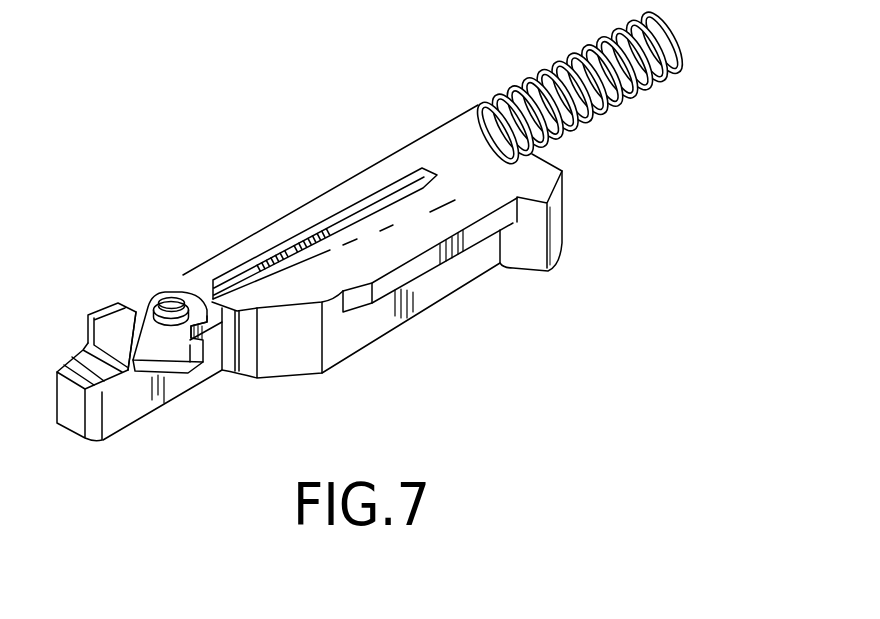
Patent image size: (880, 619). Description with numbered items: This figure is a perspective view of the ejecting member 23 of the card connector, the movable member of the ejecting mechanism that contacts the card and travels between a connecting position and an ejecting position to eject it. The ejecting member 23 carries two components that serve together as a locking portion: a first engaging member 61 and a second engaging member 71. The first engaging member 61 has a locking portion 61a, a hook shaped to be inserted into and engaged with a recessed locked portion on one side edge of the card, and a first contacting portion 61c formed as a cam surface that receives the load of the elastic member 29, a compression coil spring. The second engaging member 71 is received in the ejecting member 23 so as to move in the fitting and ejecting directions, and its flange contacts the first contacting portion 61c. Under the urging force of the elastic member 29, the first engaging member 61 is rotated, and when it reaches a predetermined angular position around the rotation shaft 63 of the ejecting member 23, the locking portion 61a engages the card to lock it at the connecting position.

The ejecting member 23 is at (303, 221).
The elastic member 29 is at (507, 93).
The first engaging member 61 is at (146, 304).
The locking portion 61a is at (190, 374).
The first contacting portion 61c is at (153, 298).
The rotation shaft 63 is at (163, 298).
The second engaging member 71 is at (208, 288).